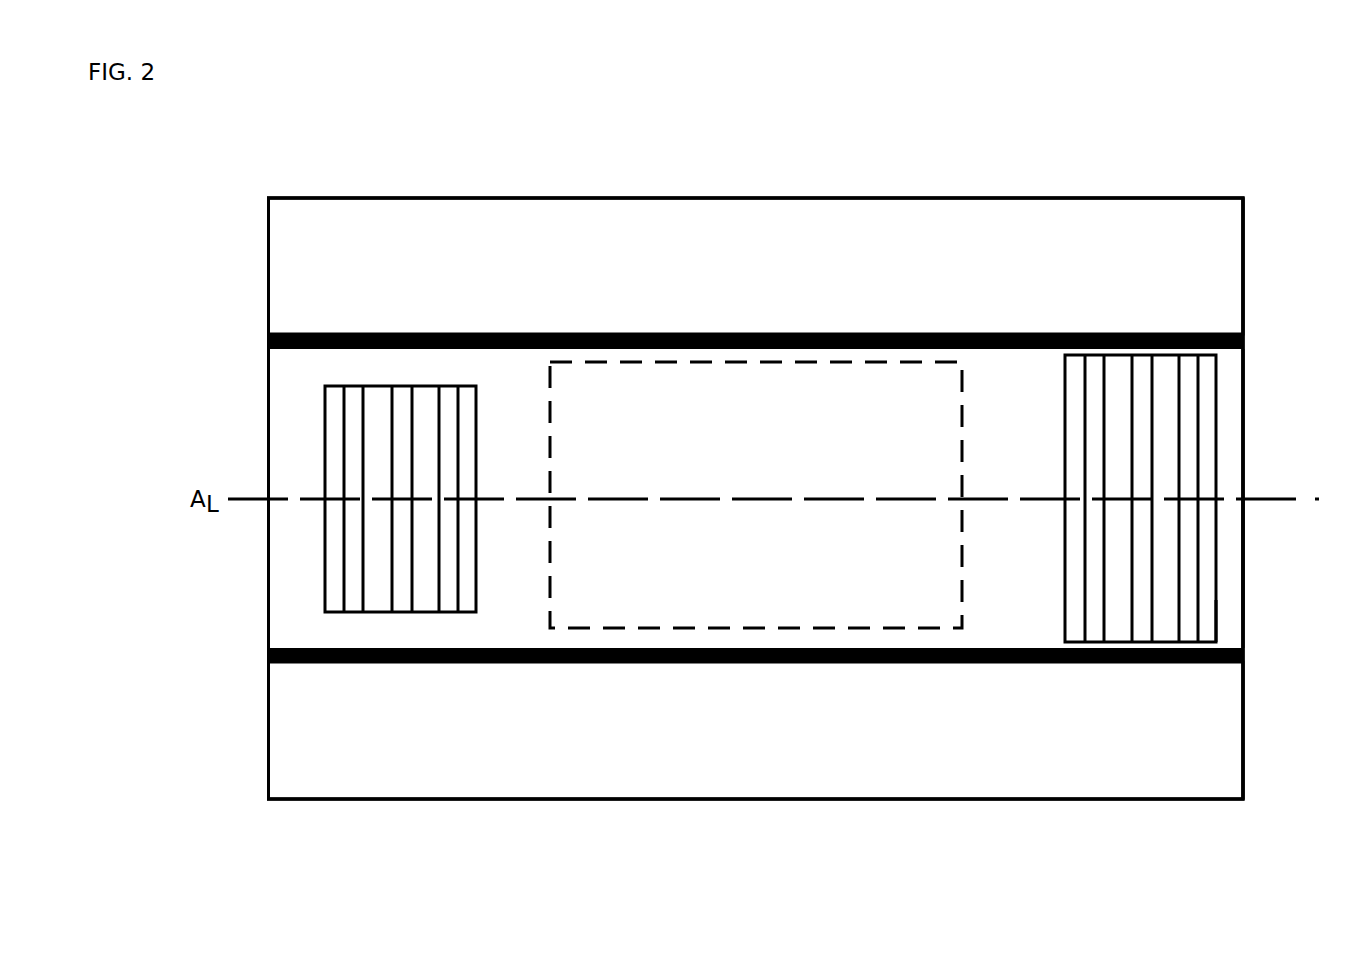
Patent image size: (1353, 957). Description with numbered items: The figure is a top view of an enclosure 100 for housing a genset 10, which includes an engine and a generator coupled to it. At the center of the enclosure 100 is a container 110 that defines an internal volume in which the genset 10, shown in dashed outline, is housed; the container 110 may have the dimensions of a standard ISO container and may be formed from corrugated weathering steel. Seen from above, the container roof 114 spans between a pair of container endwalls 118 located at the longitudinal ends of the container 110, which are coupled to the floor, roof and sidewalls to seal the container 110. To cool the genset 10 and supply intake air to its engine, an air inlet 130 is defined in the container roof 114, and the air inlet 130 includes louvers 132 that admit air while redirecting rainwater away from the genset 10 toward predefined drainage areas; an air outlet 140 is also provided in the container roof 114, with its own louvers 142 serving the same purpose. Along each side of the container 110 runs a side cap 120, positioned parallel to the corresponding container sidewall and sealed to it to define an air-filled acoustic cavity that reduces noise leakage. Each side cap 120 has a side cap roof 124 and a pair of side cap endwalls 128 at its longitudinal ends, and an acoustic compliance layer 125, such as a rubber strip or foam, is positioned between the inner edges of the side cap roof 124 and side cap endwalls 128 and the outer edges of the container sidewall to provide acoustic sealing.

The enclosure 100 is at (458, 130).
The side cap 120 is at (983, 185).
The side cap roof 124 is at (548, 225).
The acoustic compliance layer 125 is at (268, 340).
The side cap endwalls 128 is at (268, 252).
The container endwalls 118 is at (268, 462).
The air inlet 130 is at (312, 590).
The louvers 132 is at (355, 440).
The air outlet 140 is at (1228, 474).
The louvers 142 is at (1187, 380).
The container 110 is at (1255, 550).
The container roof 114 is at (1234, 616).
The genset 10 is at (948, 585).